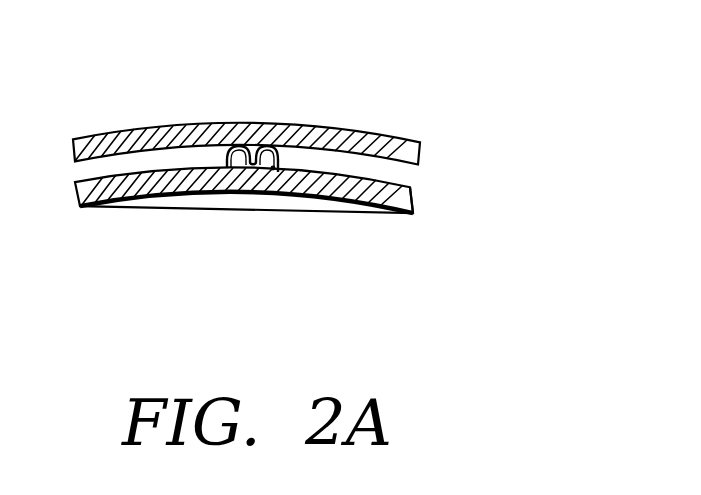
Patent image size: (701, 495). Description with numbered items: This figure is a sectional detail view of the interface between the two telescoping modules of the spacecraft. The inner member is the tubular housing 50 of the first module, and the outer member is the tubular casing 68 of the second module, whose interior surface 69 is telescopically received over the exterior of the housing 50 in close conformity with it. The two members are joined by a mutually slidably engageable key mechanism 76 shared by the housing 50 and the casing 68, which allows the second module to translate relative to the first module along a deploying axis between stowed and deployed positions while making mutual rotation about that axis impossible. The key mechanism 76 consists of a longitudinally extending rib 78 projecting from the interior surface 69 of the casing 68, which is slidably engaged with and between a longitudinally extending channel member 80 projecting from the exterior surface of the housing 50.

The tubular casing 68 is at (373, 132).
The tubular housing 50 is at (362, 206).
The interior surface 69 is at (403, 166).
The key mechanism 76 is at (248, 149).
The longitudinally extending rib 78 is at (200, 183).
The longitudinally extending channel member 80 is at (200, 197).